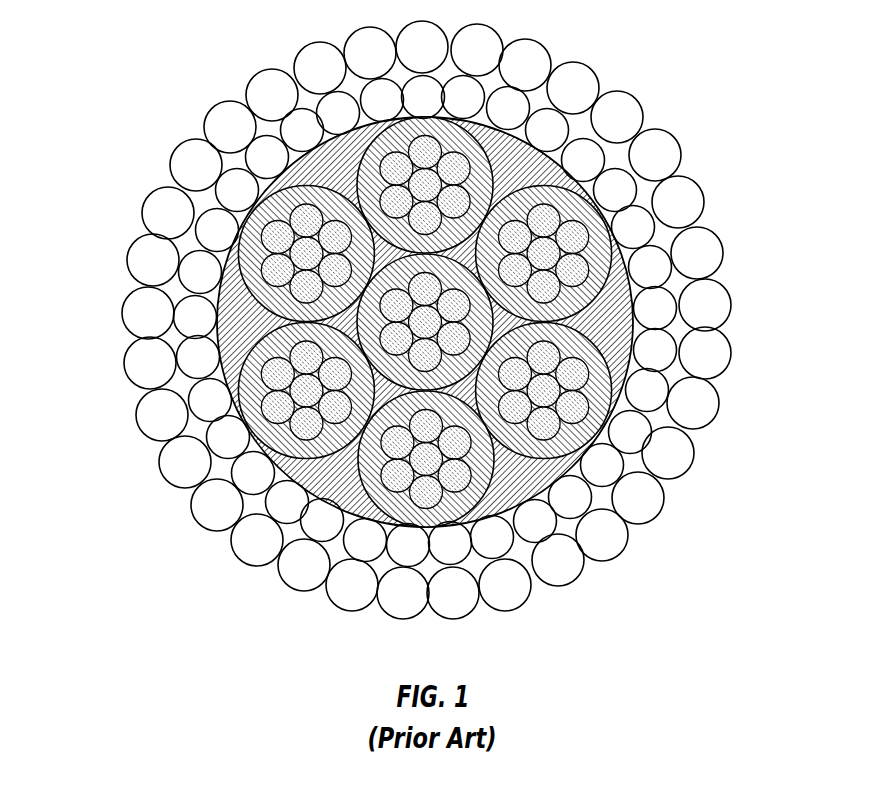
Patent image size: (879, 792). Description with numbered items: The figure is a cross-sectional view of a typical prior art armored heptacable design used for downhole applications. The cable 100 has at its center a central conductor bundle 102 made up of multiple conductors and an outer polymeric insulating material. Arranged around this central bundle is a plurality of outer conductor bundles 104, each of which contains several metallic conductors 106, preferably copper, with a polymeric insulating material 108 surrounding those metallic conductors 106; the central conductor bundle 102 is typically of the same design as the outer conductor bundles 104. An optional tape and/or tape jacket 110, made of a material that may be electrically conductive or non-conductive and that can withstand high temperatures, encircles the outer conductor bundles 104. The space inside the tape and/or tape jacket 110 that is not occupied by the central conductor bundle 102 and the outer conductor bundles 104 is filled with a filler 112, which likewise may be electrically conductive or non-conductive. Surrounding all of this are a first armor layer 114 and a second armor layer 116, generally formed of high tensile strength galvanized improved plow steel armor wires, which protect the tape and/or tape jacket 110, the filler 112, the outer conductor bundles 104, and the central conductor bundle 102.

The cable 100 is at (121, 83).
The central conductor bundle 102 is at (228, 396).
The outer conductor bundles 104 is at (367, 153).
The metallic conductors 106 is at (503, 128).
The polymeric insulating material 108 is at (460, 120).
The tape and/or tape jacket 110 is at (682, 336).
The filler 112 is at (672, 276).
The first armor layer 114 is at (333, 557).
The second armor layer 116 is at (627, 549).